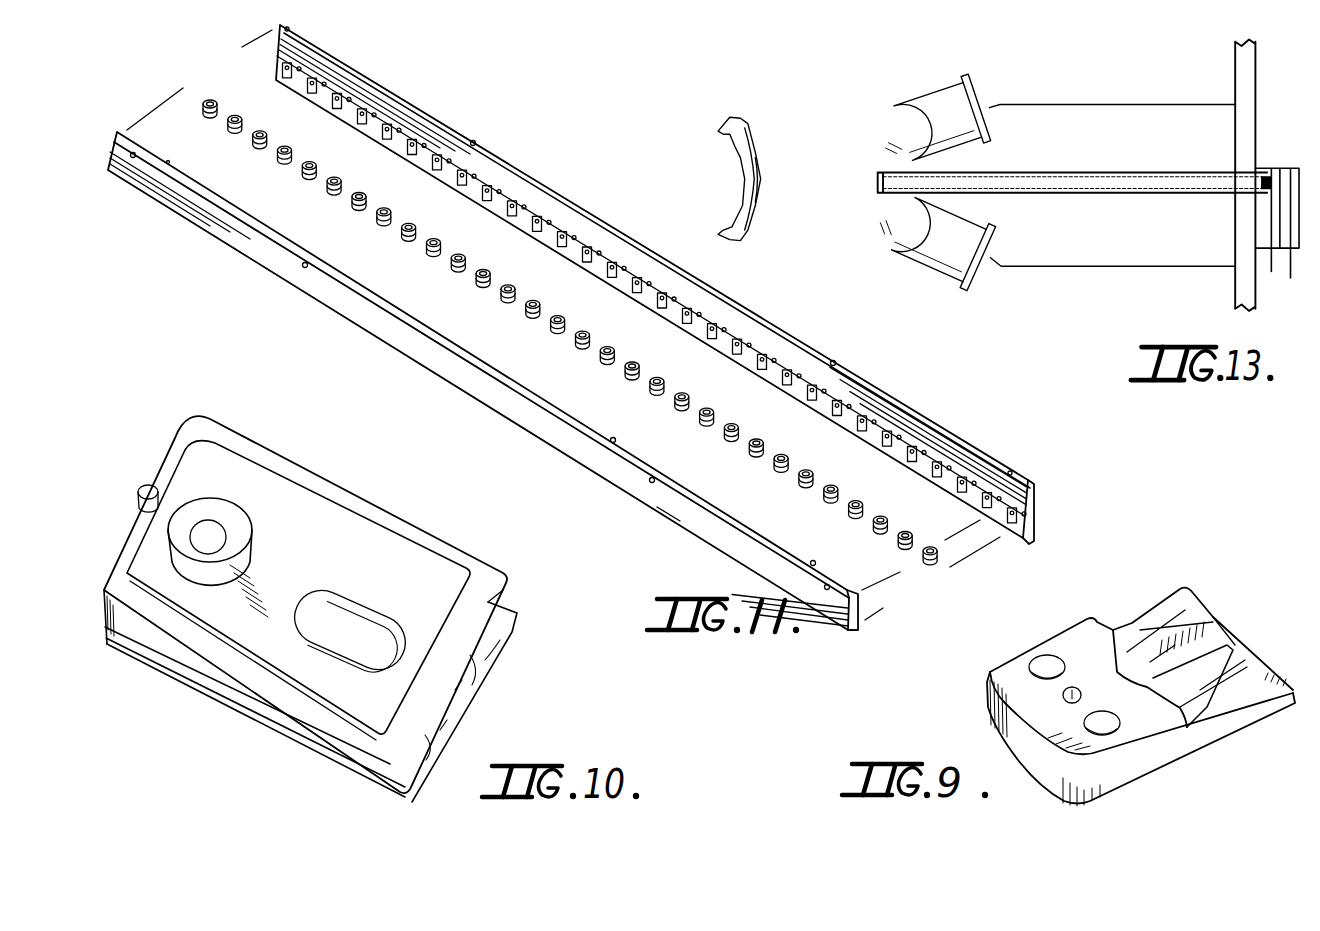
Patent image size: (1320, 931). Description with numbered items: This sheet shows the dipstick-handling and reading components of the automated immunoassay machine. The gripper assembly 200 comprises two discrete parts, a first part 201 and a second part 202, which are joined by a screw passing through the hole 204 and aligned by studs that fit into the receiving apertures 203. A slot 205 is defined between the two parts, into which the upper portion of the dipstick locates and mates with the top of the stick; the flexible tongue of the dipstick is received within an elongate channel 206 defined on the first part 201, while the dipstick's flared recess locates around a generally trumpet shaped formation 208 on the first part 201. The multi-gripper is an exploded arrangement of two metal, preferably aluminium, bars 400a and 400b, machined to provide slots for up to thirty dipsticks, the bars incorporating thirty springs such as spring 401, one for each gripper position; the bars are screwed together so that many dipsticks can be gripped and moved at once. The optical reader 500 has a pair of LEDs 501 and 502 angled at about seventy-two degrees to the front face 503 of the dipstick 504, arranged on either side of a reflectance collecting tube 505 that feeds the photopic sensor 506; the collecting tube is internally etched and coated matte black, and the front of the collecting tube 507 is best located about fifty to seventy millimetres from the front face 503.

In FIG. 11, the bar 400a is at (253, 258).
In FIG. 11, the bar 400b is at (493, 154).
In FIG. 11, the spring 401 is at (258, 134).
In FIG. 13, the optical reader 500 is at (1208, 270).
In FIG. 13, the LED 501 is at (907, 112).
In FIG. 13, the LED 502 is at (923, 243).
In FIG. 13, the front face 503 is at (758, 172).
In FIG. 13, the dipstick 504 is at (750, 118).
In FIG. 13, the reflectance collecting tube 505 is at (1036, 184).
In FIG. 13, the photopic sensor 506 is at (1283, 191).
In FIG. 13, the front of the collecting tube 507 is at (842, 206).
In FIG. 10, the gripper assembly 200 is at (313, 462).
In FIG. 10, the first part 201 is at (213, 683).
In FIG. 9, the first part 201 is at (1200, 737).
In FIG. 10, the second part 202 is at (275, 680).
In FIG. 9, the receiving apertures 203 is at (1090, 720).
In FIG. 10, the hole 204 is at (200, 523).
In FIG. 10, the slot 205 is at (379, 773).
In FIG. 9, the elongate channel 206 is at (1227, 623).
In FIG. 9, the trumpet shaped formation 208 is at (1127, 650).